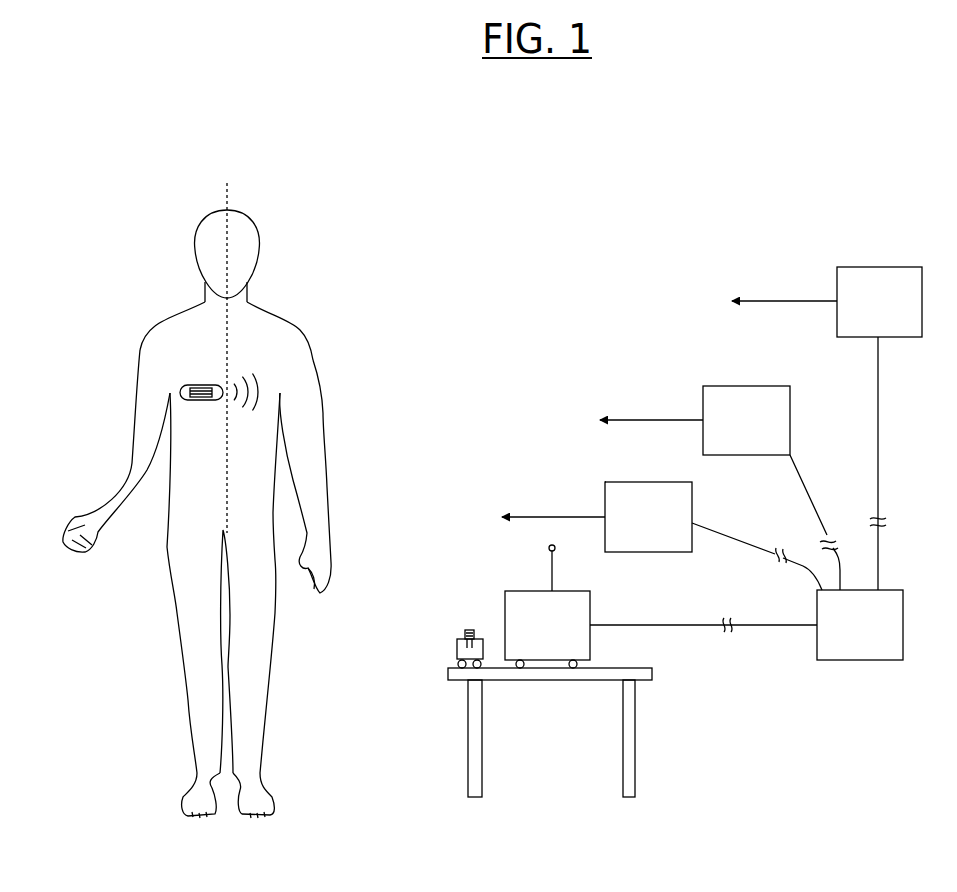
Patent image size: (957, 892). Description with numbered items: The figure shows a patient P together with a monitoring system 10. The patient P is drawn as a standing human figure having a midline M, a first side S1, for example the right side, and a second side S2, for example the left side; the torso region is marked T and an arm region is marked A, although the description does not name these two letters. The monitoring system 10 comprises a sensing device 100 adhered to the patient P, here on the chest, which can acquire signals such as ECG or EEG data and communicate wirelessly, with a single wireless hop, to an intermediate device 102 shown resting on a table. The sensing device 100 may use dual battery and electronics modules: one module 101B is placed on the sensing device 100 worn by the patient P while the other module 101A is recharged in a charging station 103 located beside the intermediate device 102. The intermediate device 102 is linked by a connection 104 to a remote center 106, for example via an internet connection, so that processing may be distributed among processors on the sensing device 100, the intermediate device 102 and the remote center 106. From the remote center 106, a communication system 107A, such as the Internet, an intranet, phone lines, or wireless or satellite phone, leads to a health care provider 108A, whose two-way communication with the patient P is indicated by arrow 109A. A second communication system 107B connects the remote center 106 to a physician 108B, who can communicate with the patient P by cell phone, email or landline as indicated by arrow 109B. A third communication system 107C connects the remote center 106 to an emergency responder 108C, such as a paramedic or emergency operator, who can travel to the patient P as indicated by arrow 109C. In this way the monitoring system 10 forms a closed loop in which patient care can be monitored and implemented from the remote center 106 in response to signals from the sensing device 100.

The monitoring system 10 is at (612, 357).
The sensing device 100 is at (202, 378).
The module 101A is at (470, 630).
The module 101B is at (205, 402).
The intermediate device 102 is at (519, 591).
The charging station 103 is at (457, 648).
The connection line 104 is at (655, 625).
The remote center 106 is at (898, 590).
The communication system 107A is at (726, 534).
The communication system 107B is at (808, 498).
The communication system 107C is at (878, 432).
The health care provider 108A is at (650, 482).
The physician 108B is at (760, 386).
The emergency responder 108C is at (888, 267).
The arrow 109A is at (533, 517).
The arrow 109B is at (634, 420).
The arrow 109C is at (766, 300).
The patient P is at (140, 283).
The midline M is at (229, 193).
The first side S1 is at (150, 323).
The second side S2 is at (305, 310).
The torso T is at (118, 373).
The arm A is at (110, 448).